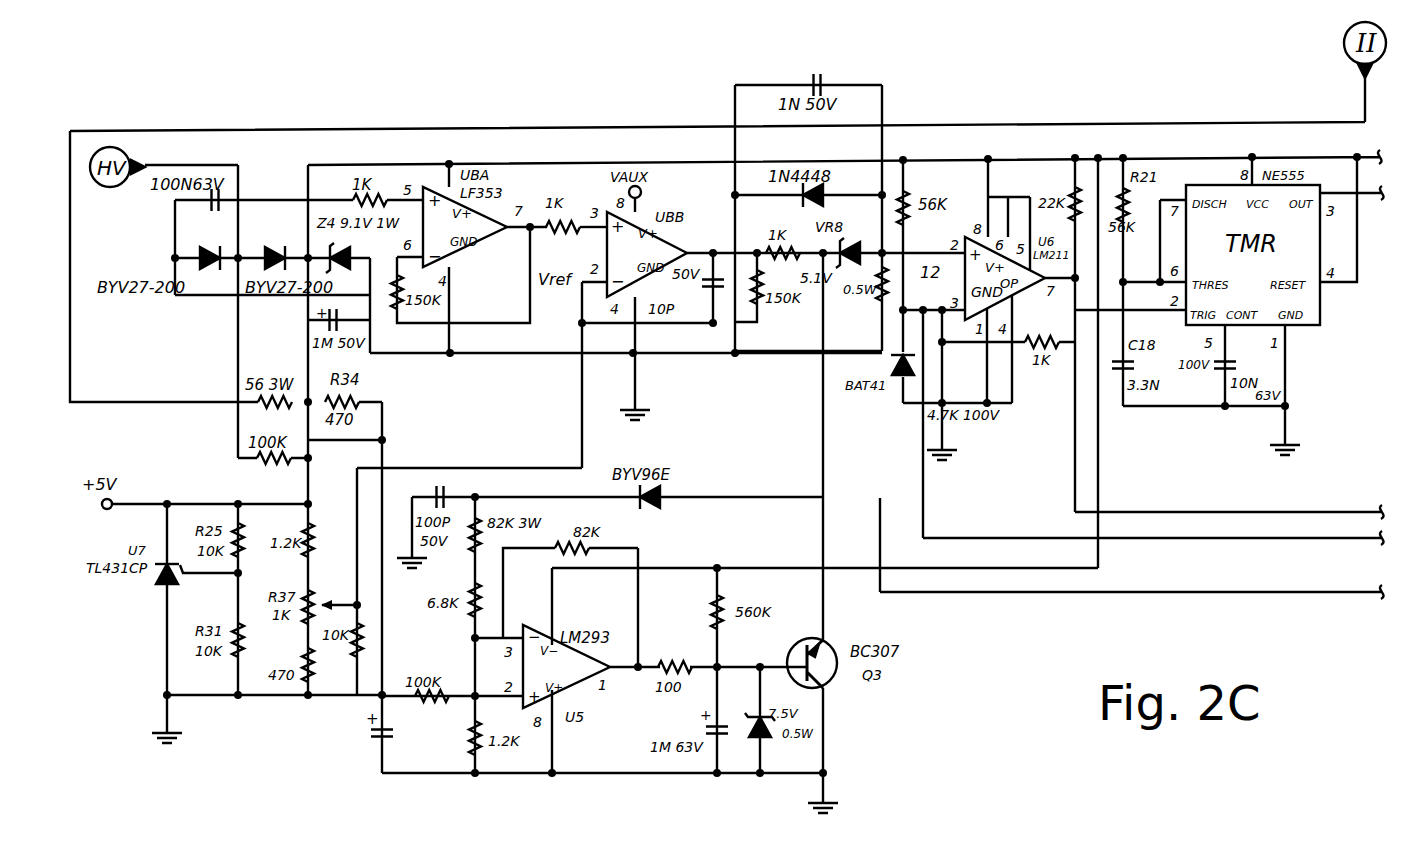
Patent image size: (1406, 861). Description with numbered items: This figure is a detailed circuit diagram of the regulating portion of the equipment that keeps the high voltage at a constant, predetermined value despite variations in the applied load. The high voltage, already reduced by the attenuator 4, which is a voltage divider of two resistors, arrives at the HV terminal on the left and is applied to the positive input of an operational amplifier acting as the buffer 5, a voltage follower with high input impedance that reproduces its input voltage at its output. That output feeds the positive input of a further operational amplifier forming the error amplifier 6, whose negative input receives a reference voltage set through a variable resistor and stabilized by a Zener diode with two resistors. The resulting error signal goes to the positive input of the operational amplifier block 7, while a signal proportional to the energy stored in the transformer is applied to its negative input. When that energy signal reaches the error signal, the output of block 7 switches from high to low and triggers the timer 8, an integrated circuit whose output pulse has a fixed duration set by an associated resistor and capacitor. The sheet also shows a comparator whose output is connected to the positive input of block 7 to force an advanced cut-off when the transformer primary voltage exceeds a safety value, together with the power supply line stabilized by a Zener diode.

The attenuator 4 is at (226, 453).
The buffer 5 is at (462, 157).
The error amplifier 6 is at (657, 196).
The operational amplifier block 7 is at (967, 214).
The timer 8 is at (1318, 167).